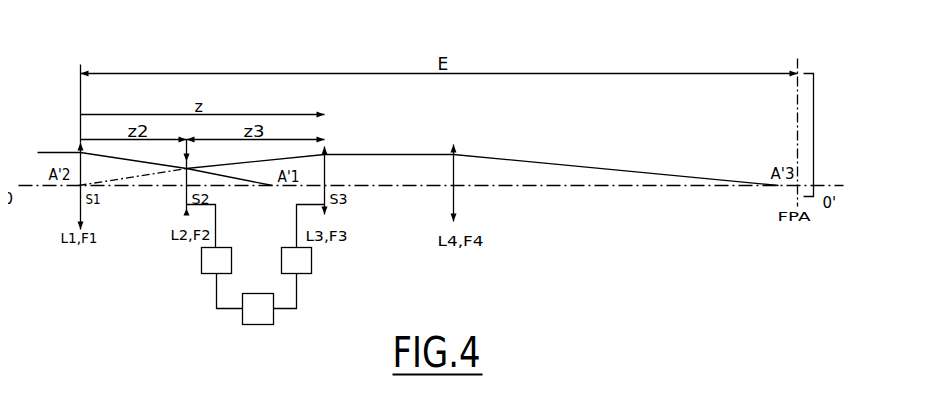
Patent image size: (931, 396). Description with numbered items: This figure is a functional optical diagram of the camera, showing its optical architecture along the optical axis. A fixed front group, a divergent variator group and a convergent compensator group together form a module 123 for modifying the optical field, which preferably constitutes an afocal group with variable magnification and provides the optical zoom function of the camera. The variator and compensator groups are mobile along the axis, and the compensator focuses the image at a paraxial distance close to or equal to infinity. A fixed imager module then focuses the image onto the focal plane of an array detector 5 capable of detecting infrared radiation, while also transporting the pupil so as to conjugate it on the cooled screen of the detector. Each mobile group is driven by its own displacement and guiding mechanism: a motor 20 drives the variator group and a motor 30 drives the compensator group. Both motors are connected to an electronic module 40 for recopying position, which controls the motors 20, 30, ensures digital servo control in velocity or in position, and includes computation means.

The array detector 5 is at (807, 139).
The motor 20 is at (217, 261).
The motor 30 is at (297, 261).
The electronic module 40 is at (258, 309).
The module for modifying the optical field 123 is at (146, 256).